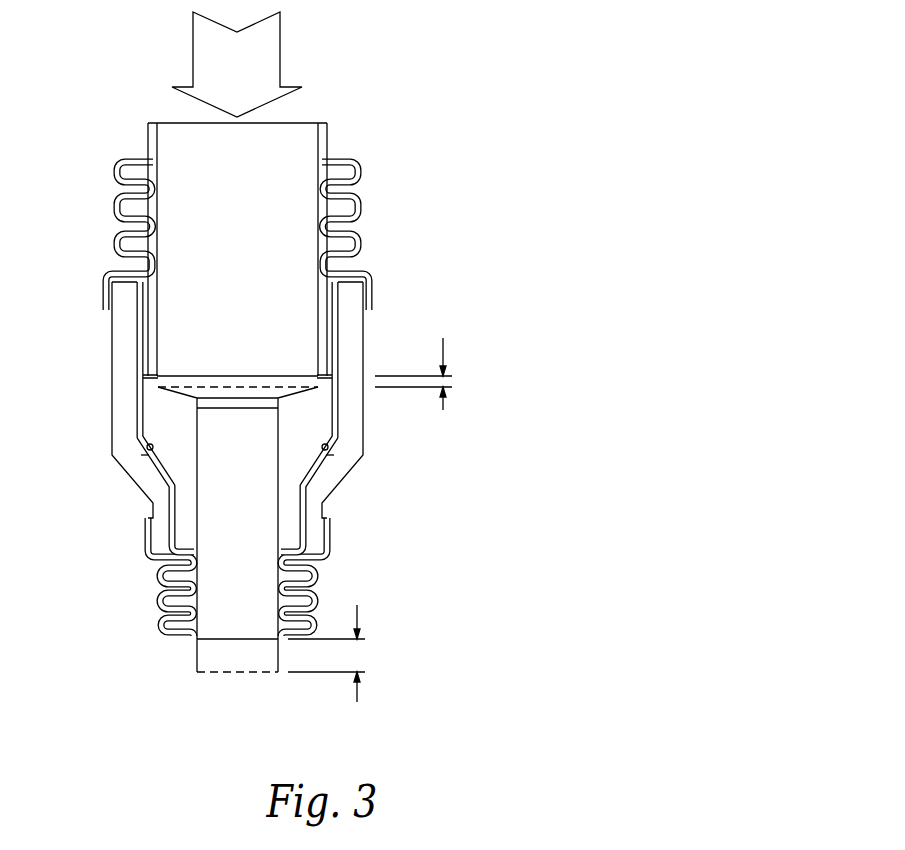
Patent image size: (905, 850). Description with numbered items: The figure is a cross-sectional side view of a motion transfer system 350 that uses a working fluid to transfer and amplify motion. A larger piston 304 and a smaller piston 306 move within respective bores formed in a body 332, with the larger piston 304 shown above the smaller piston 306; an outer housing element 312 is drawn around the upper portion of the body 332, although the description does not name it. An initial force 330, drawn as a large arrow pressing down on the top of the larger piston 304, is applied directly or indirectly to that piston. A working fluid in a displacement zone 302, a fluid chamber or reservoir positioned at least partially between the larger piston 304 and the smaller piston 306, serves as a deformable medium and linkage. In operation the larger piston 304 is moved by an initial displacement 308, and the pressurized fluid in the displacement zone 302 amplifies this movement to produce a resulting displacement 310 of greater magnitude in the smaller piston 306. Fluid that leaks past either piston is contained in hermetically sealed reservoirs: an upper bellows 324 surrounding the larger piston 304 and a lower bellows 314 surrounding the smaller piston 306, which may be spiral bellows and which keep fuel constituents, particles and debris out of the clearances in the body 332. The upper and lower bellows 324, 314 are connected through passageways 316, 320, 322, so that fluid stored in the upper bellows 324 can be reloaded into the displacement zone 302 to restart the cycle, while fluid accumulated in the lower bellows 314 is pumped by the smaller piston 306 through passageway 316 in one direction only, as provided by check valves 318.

The displacement zone 302 is at (198, 400).
The larger piston 304 is at (293, 248).
The smaller piston 306 is at (259, 491).
The initial displacement 308 is at (447, 410).
The resulting displacement 310 is at (360, 702).
The housing 312 is at (372, 271).
The lower bellows 314 is at (157, 581).
The passageway 316 is at (153, 503).
The check valve 318 is at (147, 455).
The passageway 320 is at (148, 373).
The passageway 322 is at (136, 335).
The upper bellows 324 is at (150, 248).
The initial force 330 is at (282, 43).
The body 332 is at (356, 442).
The motion transfer system 350 is at (487, 97).